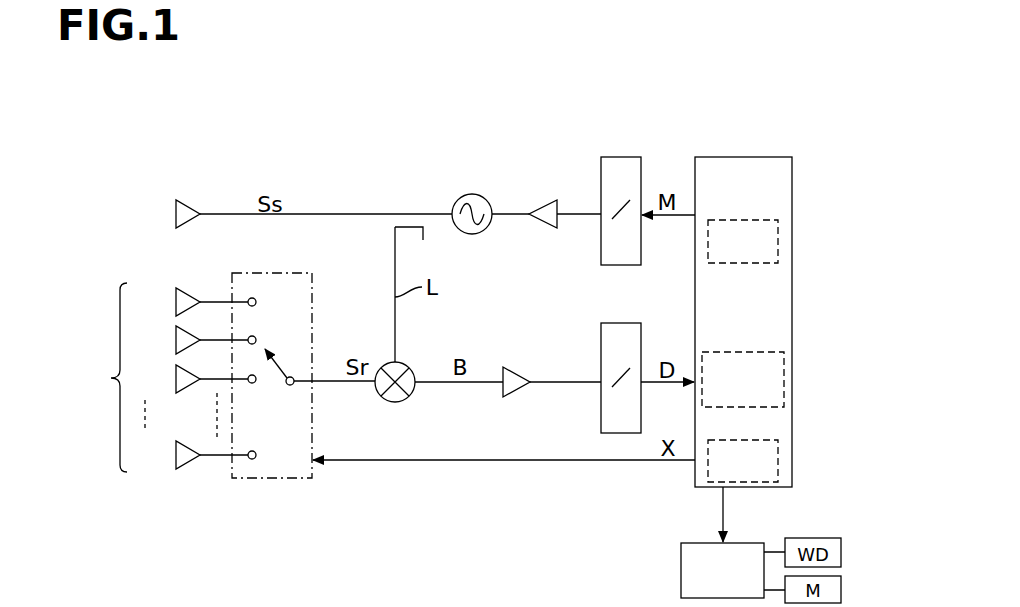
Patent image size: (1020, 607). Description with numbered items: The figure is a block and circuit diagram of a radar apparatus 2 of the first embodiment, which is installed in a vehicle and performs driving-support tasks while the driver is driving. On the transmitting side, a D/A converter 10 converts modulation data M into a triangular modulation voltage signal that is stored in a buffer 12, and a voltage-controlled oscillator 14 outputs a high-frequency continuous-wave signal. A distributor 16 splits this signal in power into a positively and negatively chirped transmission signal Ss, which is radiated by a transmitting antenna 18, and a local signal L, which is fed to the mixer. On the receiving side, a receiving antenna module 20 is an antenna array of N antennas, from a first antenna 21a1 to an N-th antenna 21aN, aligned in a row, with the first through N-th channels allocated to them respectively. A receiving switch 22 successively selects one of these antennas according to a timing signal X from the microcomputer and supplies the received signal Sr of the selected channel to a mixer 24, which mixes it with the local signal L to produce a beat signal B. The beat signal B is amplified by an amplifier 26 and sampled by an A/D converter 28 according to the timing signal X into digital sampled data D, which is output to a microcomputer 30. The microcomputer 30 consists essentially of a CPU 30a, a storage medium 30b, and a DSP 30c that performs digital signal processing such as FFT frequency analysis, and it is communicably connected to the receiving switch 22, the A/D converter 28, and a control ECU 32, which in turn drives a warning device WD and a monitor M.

The radar apparatus 2 is at (280, 117).
The D/A converter 10 is at (613, 156).
The buffer 12 is at (541, 200).
The voltage-controlled oscillator 14 is at (475, 194).
The distributor 16 is at (392, 223).
The transmitting antenna 18 is at (187, 199).
The receiving antenna module 20 is at (147, 379).
The antenna 21a1 is at (189, 294).
The antenna 21aN is at (190, 468).
The receiving switch 22 is at (252, 273).
The mixer 24 is at (397, 403).
The amplifier 26 is at (519, 398).
The A/D converter 28 is at (613, 322).
The microcomputer 30 is at (707, 156).
The CPU 30a is at (778, 250).
The storage medium 30b is at (784, 381).
The DSP 30c is at (778, 469).
The control ECU 32 is at (680, 553).